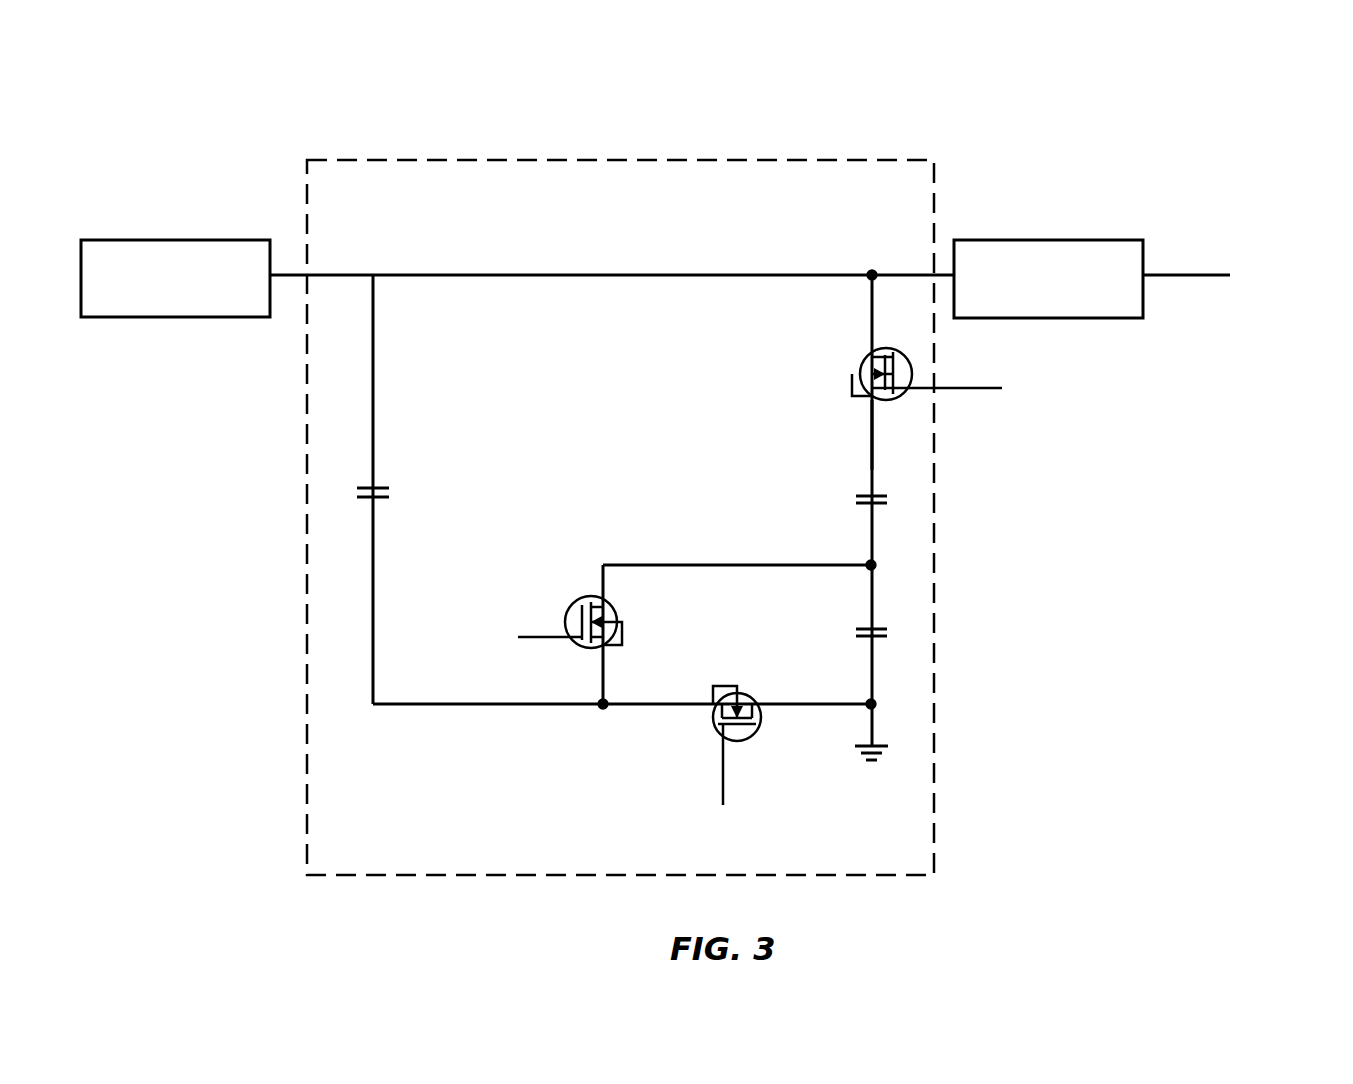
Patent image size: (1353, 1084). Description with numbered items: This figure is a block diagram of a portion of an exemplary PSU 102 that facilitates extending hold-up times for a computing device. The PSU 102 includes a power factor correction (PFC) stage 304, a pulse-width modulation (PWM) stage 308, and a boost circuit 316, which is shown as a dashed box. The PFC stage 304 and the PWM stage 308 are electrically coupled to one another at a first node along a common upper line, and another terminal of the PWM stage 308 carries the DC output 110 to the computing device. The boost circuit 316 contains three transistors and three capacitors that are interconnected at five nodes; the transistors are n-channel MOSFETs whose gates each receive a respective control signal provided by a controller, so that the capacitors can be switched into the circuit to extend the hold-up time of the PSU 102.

The PSU 102 is at (148, 126).
The power factor correction (PFC) stage 304 is at (175, 278).
The pulse-width modulation (PWM) stage 308 is at (1048, 279).
The DC output 110 is at (1232, 285).
The boost circuit 316 is at (933, 848).